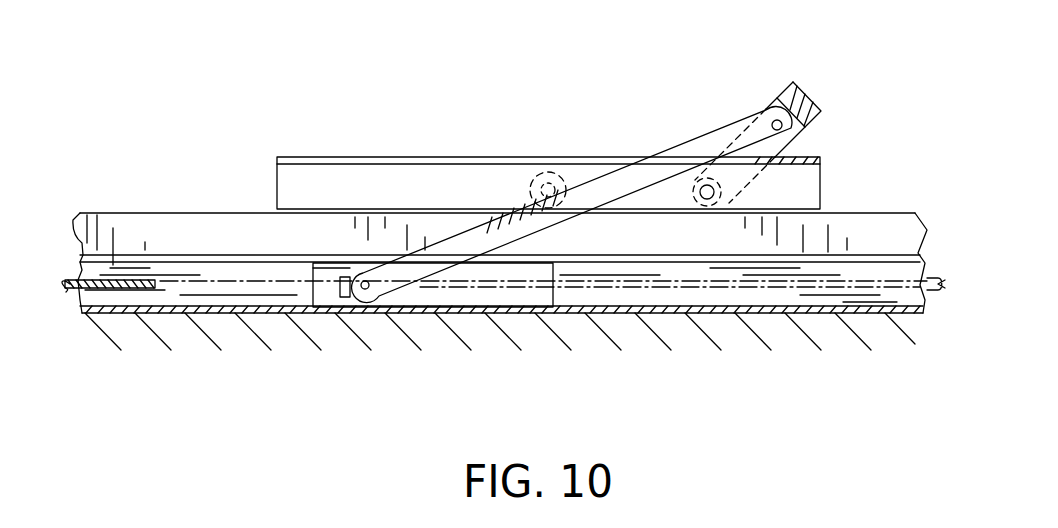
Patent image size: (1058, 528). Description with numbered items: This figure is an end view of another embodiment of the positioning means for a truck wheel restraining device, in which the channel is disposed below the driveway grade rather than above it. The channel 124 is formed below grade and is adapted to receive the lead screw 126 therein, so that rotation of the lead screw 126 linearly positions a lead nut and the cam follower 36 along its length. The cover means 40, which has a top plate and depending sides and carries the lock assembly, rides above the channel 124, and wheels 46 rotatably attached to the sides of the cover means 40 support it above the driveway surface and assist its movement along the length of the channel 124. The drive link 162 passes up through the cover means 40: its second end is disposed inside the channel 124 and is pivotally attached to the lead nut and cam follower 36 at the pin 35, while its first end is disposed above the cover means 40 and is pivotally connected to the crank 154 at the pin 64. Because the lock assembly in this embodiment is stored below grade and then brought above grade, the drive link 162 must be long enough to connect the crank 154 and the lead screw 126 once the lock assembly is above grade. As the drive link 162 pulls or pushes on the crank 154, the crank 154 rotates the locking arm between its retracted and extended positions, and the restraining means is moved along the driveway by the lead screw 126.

The lead screw 126 is at (113, 250).
The channel 124 is at (907, 312).
The cam follower 36 is at (340, 307).
The pin 35 is at (372, 300).
The cover means 40 is at (822, 157).
The wheels 46 is at (548, 172).
The crank 154 is at (822, 102).
The drive link 162 is at (676, 152).
The pin 64 is at (764, 114).